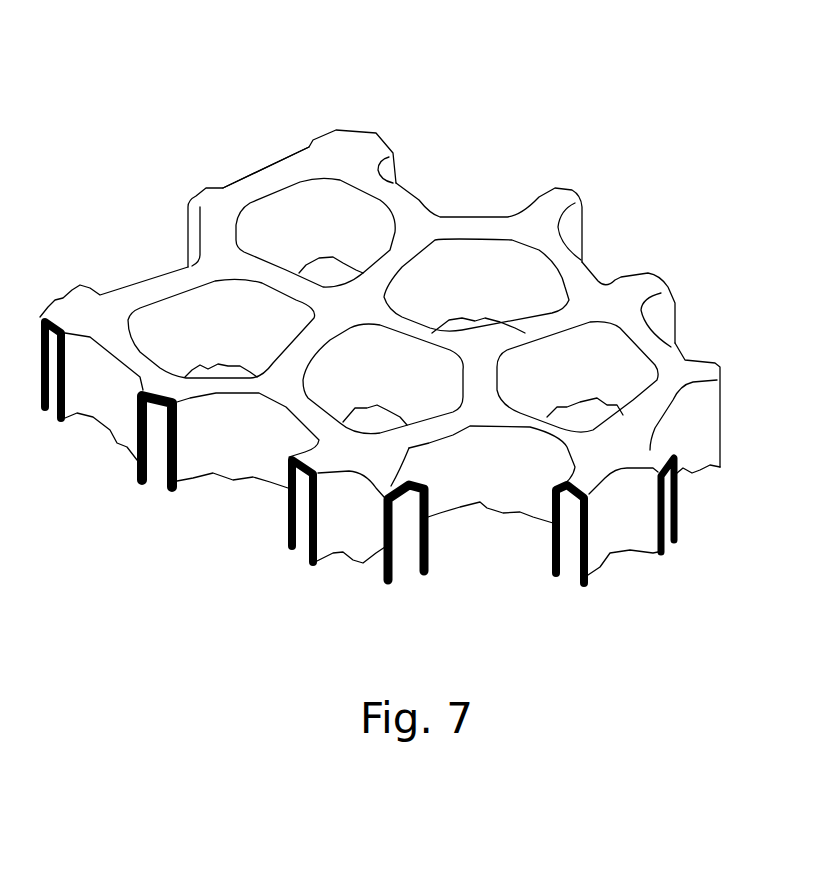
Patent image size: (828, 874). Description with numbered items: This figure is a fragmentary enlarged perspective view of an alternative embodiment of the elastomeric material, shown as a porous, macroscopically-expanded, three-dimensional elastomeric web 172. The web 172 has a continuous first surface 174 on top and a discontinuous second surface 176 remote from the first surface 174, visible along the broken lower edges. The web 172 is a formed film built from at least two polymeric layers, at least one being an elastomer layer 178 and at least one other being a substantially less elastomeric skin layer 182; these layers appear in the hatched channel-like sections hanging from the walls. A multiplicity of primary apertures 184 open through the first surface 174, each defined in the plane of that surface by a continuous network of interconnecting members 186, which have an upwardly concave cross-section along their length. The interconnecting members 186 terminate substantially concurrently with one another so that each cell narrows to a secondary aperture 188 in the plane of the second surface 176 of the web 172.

The elastomeric web 172 is at (379, 127).
The first surface 174 is at (267, 177).
The second surface 176 is at (492, 512).
The elastomer layer 178 is at (389, 548).
The skin layer 182 is at (386, 545).
The primary apertures 184 is at (539, 297).
The interconnecting members 186 is at (509, 340).
The secondary aperture 188 is at (211, 366).